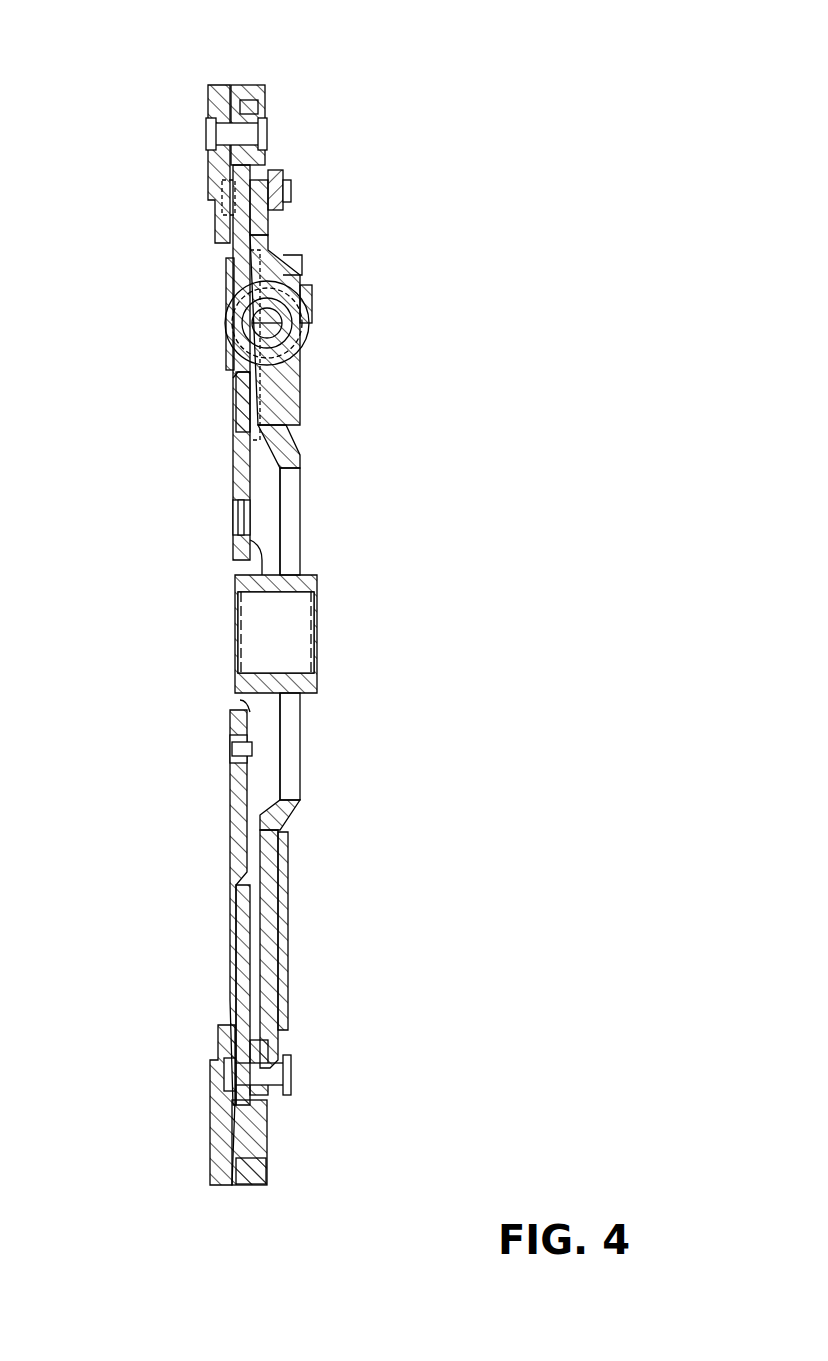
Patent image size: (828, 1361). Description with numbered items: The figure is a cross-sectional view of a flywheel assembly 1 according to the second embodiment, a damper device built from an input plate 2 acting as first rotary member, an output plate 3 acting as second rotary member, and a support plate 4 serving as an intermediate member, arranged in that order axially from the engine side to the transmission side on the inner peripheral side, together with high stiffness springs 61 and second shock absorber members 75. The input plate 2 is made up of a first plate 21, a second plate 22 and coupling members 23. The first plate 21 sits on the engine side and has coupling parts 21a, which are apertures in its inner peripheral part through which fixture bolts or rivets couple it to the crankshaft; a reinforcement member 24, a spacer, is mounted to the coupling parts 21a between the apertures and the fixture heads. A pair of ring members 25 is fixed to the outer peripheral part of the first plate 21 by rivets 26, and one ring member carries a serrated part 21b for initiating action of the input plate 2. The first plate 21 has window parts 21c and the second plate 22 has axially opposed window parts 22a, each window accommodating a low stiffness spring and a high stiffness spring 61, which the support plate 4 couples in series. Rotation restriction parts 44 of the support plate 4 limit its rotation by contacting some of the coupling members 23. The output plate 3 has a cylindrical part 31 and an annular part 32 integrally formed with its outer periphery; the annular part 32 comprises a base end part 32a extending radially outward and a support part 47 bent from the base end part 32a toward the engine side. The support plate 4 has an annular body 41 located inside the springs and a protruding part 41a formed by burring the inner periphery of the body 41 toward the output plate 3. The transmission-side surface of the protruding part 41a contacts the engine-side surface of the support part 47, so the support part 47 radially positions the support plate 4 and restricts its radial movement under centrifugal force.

The flywheel assembly 1 is at (340, 92).
The input plate 2 is at (215, 275).
The output plate 3 is at (322, 463).
The support plate 4 is at (232, 372).
The first plate 21 is at (230, 412).
The coupling parts 21a is at (215, 518).
The serrated part 21b is at (255, 85).
The window parts 21c is at (215, 322).
The second plate 22 is at (300, 395).
The window parts 22a is at (325, 300).
The coupling members 23 is at (295, 190).
The reinforcement member 24 is at (240, 560).
The ring members 25 is at (215, 75).
The rivets 26 is at (208, 132).
The cylindrical part 31 is at (317, 580).
The annular part 32 is at (320, 488).
The base end part 32a is at (290, 522).
The annular body 41 is at (232, 432).
The protruding part 41a is at (235, 468).
The rotation restriction parts 44 is at (275, 180).
The support part 47 is at (295, 450).
The high stiffness springs 61 is at (312, 340).
The second shock absorber members 75 is at (302, 285).